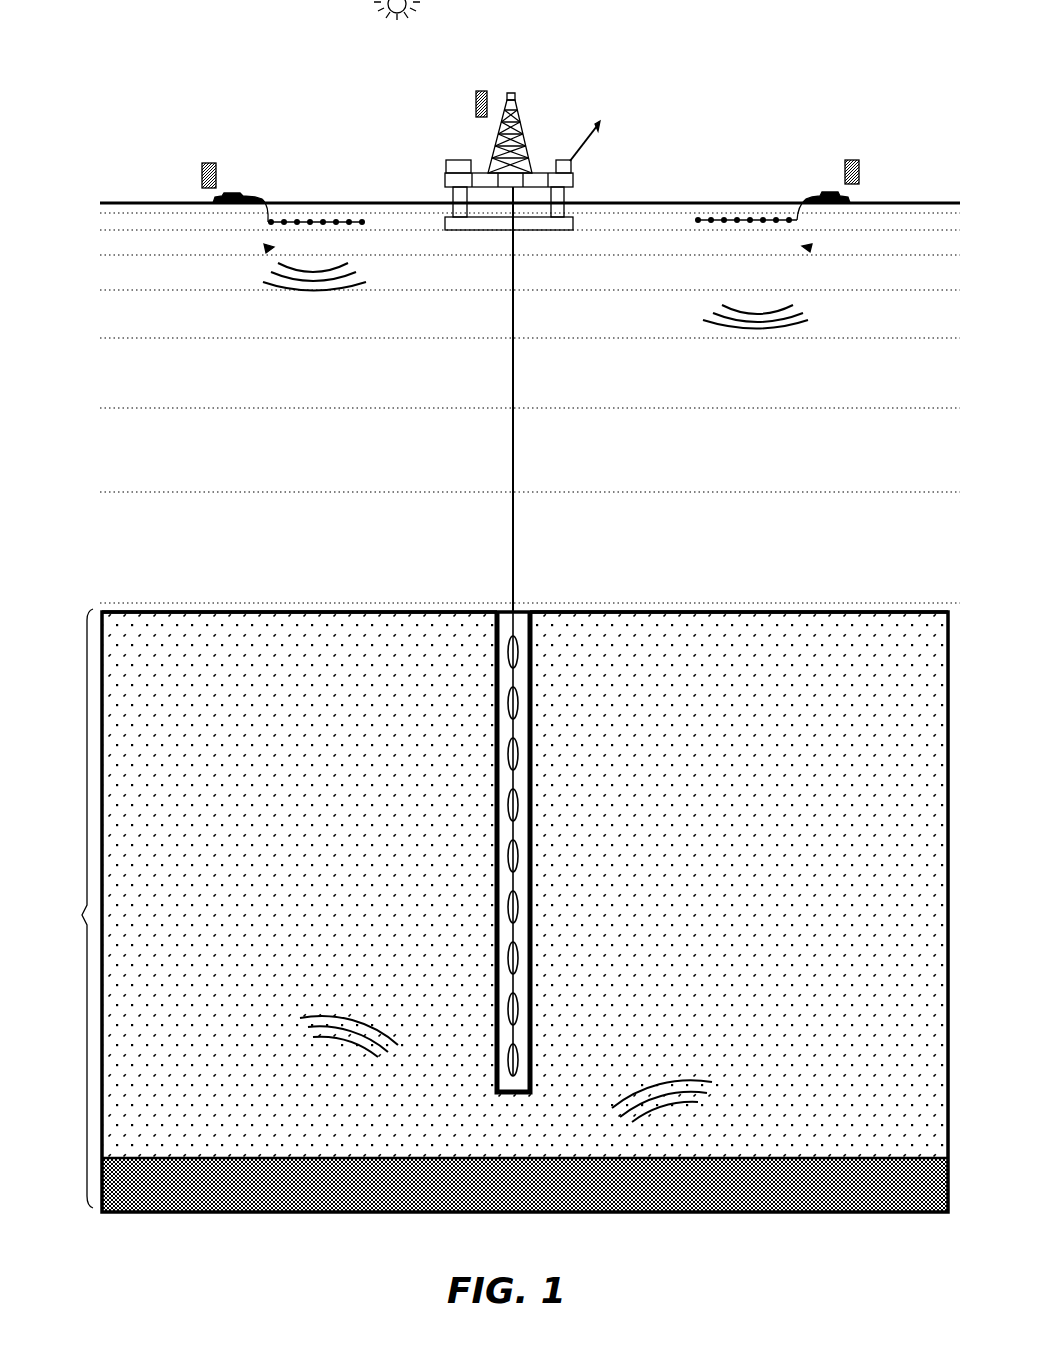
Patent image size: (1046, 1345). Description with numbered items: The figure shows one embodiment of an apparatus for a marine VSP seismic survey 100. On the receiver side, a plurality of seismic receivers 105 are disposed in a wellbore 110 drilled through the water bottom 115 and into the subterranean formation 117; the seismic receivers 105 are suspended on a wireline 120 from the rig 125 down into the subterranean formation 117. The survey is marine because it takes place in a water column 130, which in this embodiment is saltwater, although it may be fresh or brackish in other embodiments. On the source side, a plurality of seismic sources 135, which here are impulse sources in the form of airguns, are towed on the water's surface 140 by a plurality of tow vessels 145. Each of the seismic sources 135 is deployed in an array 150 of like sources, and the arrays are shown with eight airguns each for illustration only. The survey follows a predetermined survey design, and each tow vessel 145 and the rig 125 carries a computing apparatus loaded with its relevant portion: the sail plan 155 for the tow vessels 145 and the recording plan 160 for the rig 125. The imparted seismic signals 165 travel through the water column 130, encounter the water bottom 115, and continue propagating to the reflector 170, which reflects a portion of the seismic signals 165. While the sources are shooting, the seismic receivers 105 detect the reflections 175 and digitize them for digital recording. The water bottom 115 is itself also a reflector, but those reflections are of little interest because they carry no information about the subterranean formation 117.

The VSP seismic survey 100 is at (222, 53).
The seismic receivers 105 is at (511, 628).
The wellbore 110 is at (524, 612).
The water bottom 115 is at (280, 611).
The subterranean formation 117 is at (69, 908).
The wireline 120 is at (516, 420).
The rig 125 is at (445, 172).
The water column 130 is at (443, 456).
The seismic sources 135 is at (340, 218).
The water's surface 140 is at (160, 201).
The tow vessels 145 is at (240, 196).
The array 150 is at (264, 249).
The sail plan 155 is at (206, 162).
The recording plan 160 is at (475, 91).
The seismic signals 165 is at (314, 294).
The reflector 170 is at (826, 1157).
The reflections 175 is at (300, 1017).